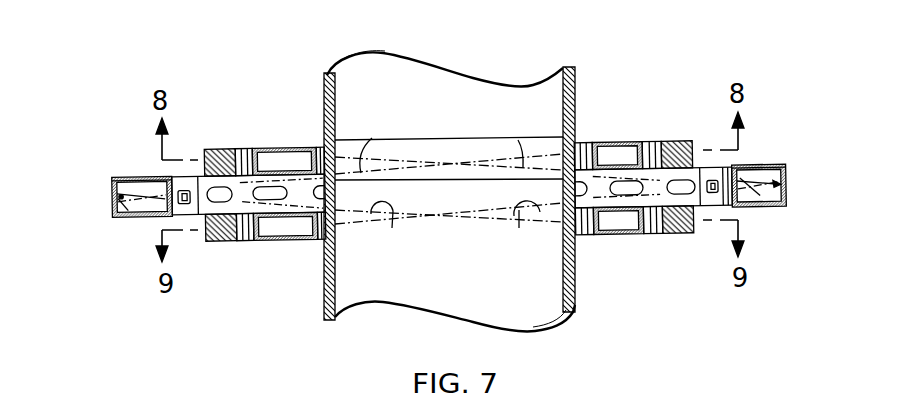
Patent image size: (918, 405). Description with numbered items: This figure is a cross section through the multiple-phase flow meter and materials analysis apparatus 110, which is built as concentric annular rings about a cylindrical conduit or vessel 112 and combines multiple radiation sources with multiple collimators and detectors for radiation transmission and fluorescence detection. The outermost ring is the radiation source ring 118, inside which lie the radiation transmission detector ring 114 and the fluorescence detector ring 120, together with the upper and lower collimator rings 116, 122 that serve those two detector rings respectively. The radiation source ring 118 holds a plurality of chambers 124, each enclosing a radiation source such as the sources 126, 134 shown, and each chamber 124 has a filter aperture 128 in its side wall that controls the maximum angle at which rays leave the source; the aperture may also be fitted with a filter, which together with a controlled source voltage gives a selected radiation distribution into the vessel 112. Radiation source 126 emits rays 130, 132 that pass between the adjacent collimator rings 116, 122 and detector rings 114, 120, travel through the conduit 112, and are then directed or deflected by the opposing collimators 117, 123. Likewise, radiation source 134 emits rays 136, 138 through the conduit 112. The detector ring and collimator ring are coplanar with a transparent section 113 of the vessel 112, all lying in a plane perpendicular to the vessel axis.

The multiple-phase flow meter and materials analysis apparatus 110 is at (628, 70).
The conduit 112 is at (573, 82).
The transparent section 113 is at (450, 145).
The radiation transmission detector ring 114 is at (217, 150).
The upper collimator ring 116 is at (610, 142).
The collimator 117 is at (290, 160).
The radiation source ring 118 is at (112, 178).
The fluorescence detector ring 120 is at (215, 245).
The lower collimator ring 122 is at (622, 238).
The collimator 123 is at (291, 232).
The chamber 124 is at (138, 214).
The radiation source 126 is at (788, 200).
The filter aperture 128 is at (220, 193).
The ray 130 is at (518, 140).
The ray 132 is at (519, 228).
The radiation source 134 is at (126, 205).
The ray 136 is at (372, 138).
The ray 138 is at (392, 228).